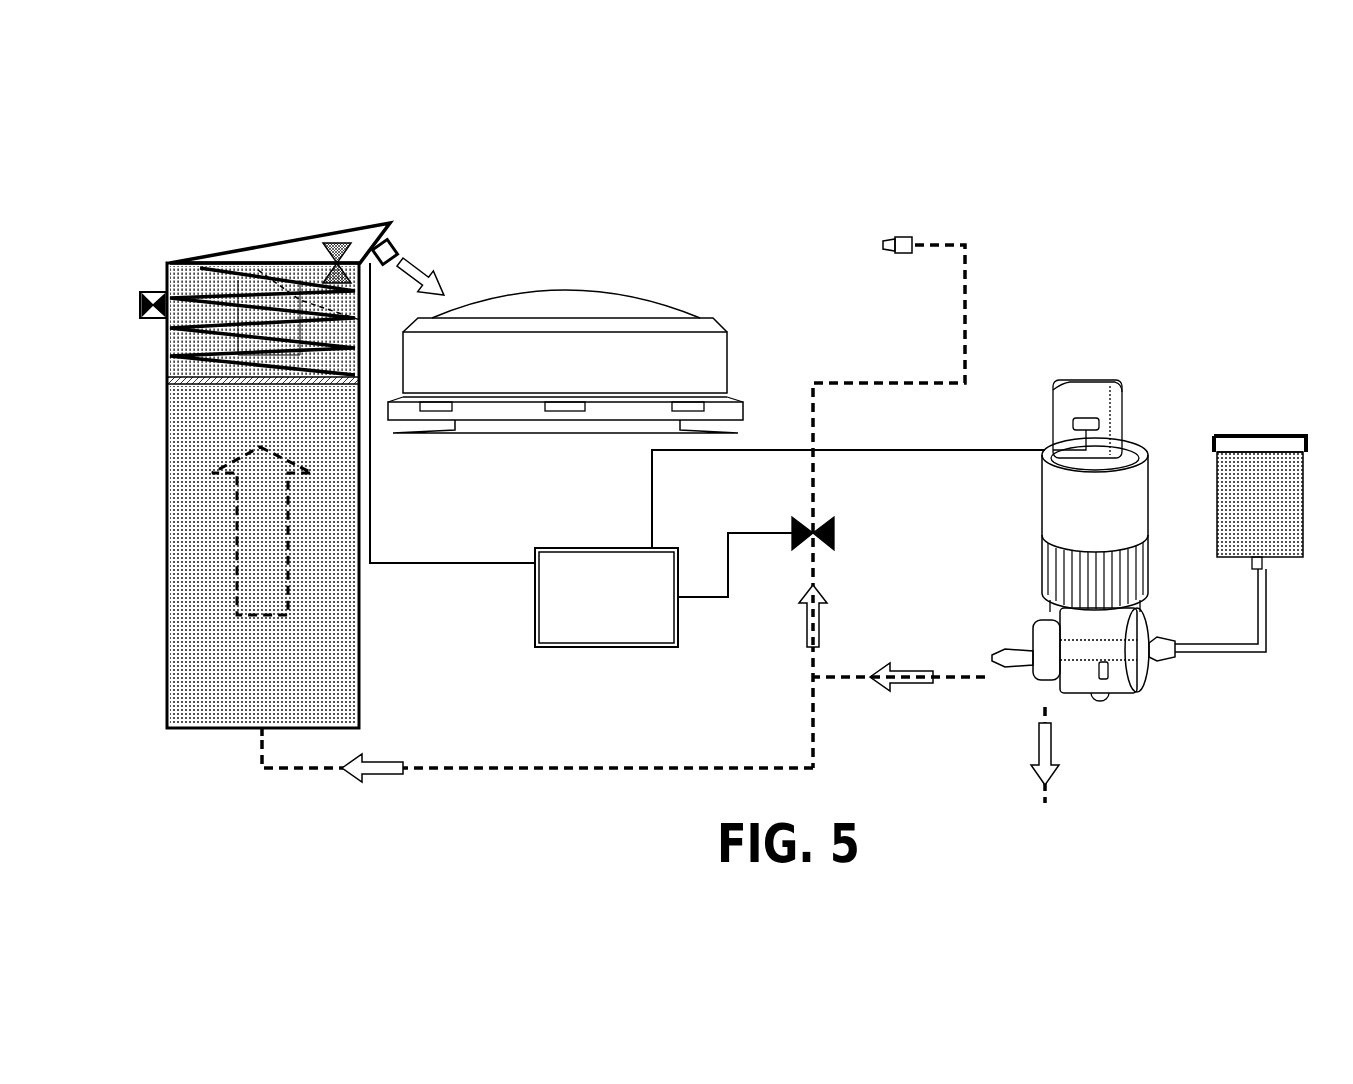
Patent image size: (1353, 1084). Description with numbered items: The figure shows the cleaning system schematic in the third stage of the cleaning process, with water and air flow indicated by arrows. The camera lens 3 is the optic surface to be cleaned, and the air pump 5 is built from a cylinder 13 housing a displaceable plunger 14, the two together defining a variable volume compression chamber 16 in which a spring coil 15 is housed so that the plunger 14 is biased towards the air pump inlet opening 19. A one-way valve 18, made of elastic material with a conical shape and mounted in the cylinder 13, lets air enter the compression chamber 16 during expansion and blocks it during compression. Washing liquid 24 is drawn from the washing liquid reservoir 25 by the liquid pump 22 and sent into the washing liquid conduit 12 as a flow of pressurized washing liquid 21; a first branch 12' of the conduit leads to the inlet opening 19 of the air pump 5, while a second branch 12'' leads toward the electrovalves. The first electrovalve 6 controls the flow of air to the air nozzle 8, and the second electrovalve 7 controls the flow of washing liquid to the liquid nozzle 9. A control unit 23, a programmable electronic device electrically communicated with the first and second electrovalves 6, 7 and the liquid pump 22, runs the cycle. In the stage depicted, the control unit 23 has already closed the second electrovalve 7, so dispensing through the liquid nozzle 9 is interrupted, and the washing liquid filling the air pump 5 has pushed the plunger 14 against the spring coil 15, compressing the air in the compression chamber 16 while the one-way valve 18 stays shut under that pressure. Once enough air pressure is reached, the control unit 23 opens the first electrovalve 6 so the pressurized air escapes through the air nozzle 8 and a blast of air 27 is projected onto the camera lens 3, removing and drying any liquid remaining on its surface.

The camera lens 3 is at (557, 310).
The air pump 5 is at (374, 647).
The first electrovalve 6 is at (327, 252).
The second electrovalve 7 is at (832, 535).
The air nozzle 8 is at (393, 248).
The liquid nozzle 9 is at (906, 240).
The washing liquid conduit 12 is at (936, 733).
The first branch 12' is at (537, 787).
The second branch 12'' is at (859, 623).
The cylinder 13 is at (167, 498).
The plunger 14 is at (202, 380).
The spring coil 15 is at (198, 295).
The compression chamber 16 is at (205, 340).
The one-way valve 18 is at (153, 295).
The air pump inlet opening 19 is at (260, 730).
The flow of pressurized washing liquid 21 is at (262, 562).
The liquid pump 22 is at (1133, 447).
The control unit 23 is at (587, 648).
The washing liquid 24 is at (1257, 478).
The washing liquid reservoir 25 is at (1278, 557).
The blast of air 27 is at (430, 276).